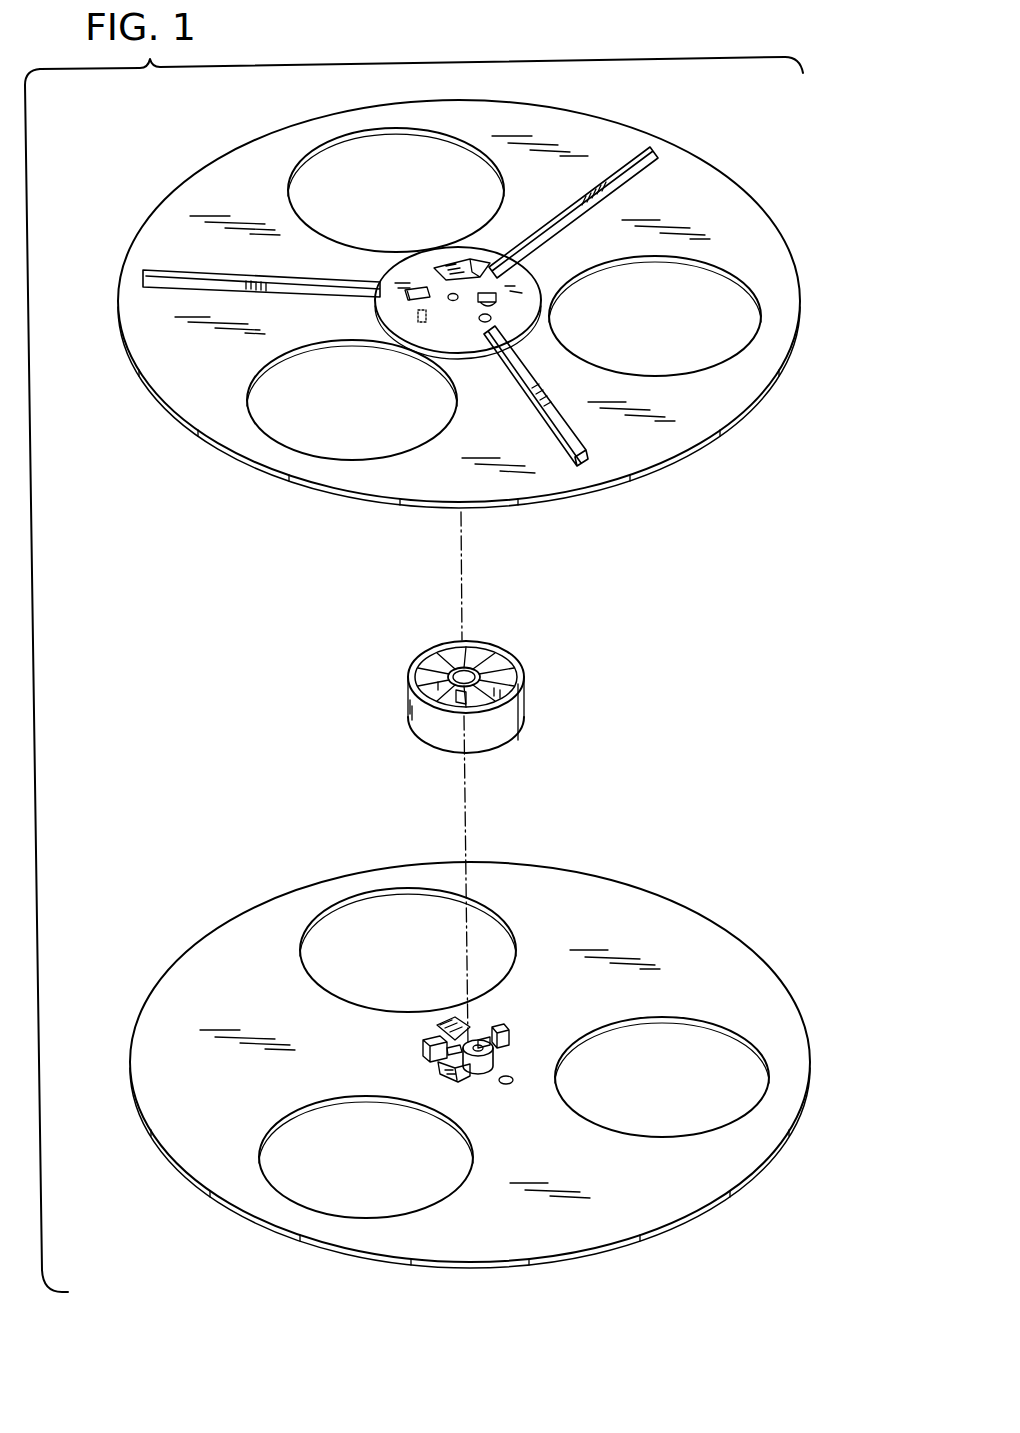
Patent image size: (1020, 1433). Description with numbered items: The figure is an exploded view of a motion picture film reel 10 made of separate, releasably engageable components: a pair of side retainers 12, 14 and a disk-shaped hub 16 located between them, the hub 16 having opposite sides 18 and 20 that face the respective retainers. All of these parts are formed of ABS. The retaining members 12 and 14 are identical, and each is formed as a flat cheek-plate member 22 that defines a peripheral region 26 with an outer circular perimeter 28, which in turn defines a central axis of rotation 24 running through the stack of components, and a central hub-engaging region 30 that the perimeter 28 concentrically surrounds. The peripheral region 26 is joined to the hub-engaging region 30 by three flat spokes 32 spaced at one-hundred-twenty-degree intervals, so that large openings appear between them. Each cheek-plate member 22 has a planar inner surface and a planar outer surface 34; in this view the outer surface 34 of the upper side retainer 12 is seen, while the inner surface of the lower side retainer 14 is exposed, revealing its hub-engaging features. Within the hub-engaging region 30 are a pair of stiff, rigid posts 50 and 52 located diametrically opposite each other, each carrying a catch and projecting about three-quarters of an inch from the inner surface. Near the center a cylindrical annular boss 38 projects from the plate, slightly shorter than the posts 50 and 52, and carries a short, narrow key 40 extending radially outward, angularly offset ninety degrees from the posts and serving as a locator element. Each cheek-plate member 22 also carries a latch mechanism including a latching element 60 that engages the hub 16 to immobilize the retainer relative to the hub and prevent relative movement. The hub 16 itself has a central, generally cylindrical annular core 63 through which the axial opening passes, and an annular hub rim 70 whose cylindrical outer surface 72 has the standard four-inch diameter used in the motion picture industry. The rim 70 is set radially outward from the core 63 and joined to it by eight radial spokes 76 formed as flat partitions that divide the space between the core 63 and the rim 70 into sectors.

The motion picture film reel 10 is at (142, 168).
The side retainer 12 is at (684, 152).
The side retainer 14 is at (735, 932).
The hub 16 is at (476, 693).
The hub side 18 is at (457, 641).
The hub side 20 is at (433, 747).
The cheek-plate member 22 is at (555, 178).
The central axis of rotation 24 is at (461, 556).
The peripheral region 26 is at (768, 324).
The circular perimeter 28 is at (673, 455).
The hub-engaging region 30 is at (418, 262).
The flat spoke 32 is at (600, 242).
The planar outer surface 34 is at (230, 188).
The cylindrical annular boss 38 is at (470, 1072).
The key 40 is at (485, 1060).
The post 50 is at (503, 1035).
The post 52 is at (437, 1077).
The latching element 60 is at (460, 272).
The annular core 63 is at (498, 648).
The hub rim 70 is at (480, 740).
The cylindrical outer surface 72 is at (417, 715).
The radial spoke 76 is at (423, 704).